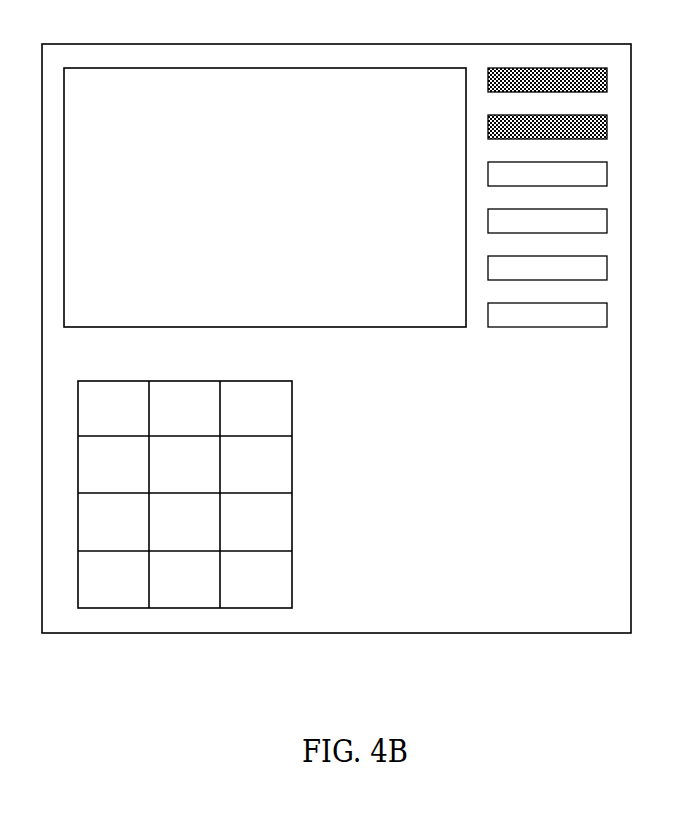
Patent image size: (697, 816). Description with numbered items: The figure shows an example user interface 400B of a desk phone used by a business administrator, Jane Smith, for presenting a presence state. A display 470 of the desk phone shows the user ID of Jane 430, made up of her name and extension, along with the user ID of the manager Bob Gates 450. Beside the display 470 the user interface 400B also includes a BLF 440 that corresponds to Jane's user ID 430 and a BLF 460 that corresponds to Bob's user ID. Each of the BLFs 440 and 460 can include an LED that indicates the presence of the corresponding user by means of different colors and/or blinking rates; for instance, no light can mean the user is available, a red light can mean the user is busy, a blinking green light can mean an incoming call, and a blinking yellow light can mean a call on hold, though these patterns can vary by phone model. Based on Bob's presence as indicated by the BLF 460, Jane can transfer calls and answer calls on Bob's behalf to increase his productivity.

The user interface 400B is at (153, 635).
The user ID of Jane 430 is at (326, 116).
The BLF 440 is at (552, 66).
The user ID of the manager Bob Gates 450 is at (359, 142).
The BLF 460 is at (612, 128).
The display 470 is at (364, 322).